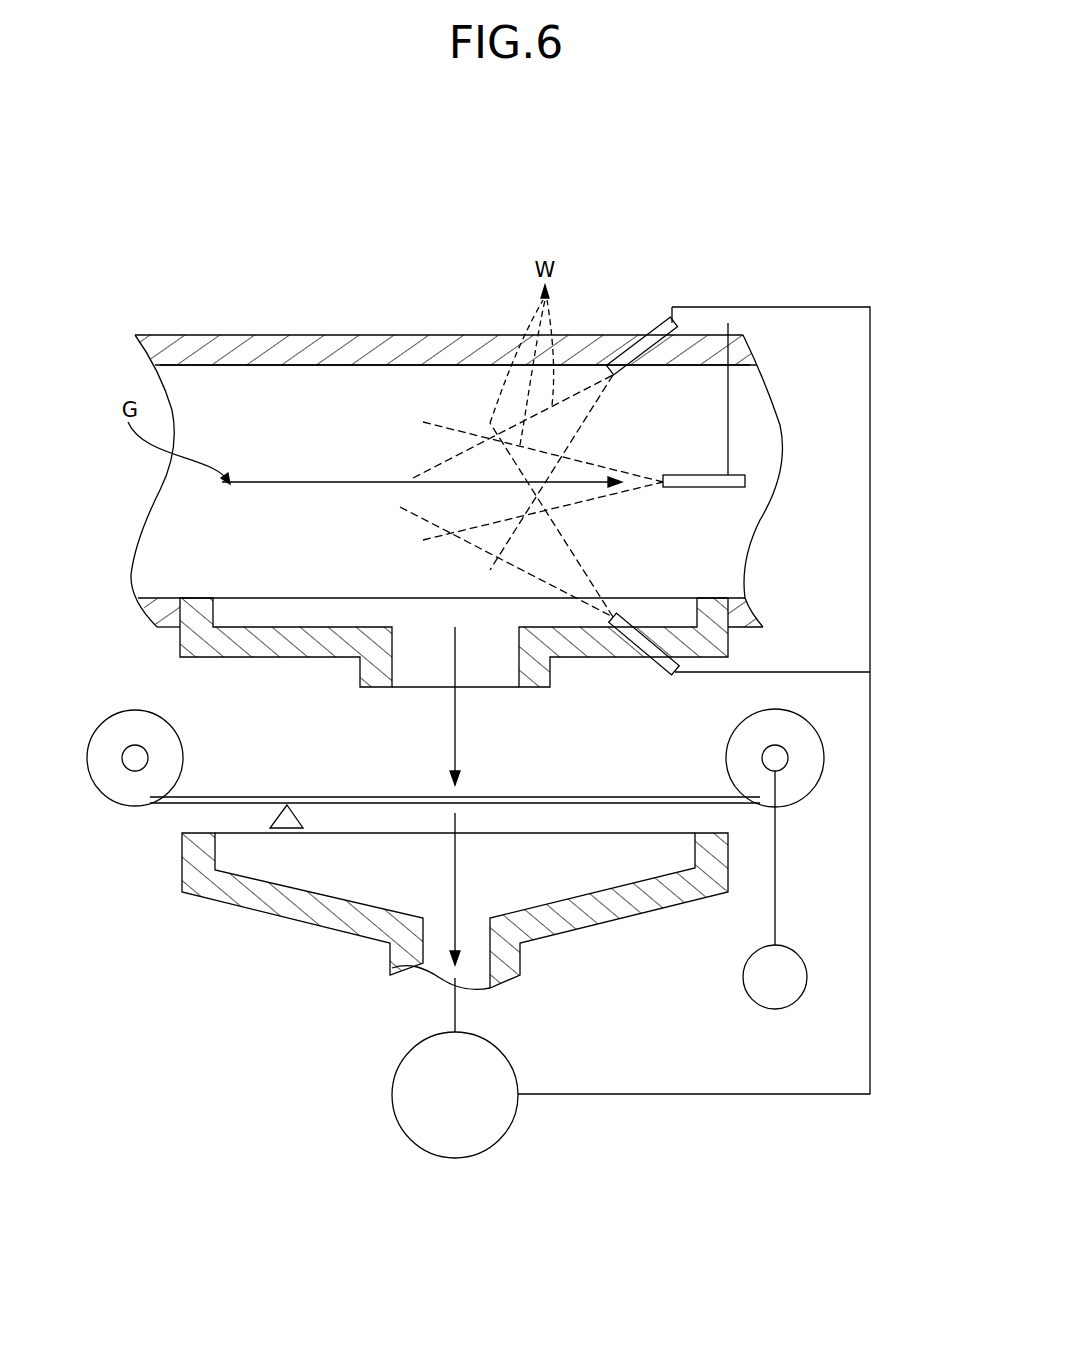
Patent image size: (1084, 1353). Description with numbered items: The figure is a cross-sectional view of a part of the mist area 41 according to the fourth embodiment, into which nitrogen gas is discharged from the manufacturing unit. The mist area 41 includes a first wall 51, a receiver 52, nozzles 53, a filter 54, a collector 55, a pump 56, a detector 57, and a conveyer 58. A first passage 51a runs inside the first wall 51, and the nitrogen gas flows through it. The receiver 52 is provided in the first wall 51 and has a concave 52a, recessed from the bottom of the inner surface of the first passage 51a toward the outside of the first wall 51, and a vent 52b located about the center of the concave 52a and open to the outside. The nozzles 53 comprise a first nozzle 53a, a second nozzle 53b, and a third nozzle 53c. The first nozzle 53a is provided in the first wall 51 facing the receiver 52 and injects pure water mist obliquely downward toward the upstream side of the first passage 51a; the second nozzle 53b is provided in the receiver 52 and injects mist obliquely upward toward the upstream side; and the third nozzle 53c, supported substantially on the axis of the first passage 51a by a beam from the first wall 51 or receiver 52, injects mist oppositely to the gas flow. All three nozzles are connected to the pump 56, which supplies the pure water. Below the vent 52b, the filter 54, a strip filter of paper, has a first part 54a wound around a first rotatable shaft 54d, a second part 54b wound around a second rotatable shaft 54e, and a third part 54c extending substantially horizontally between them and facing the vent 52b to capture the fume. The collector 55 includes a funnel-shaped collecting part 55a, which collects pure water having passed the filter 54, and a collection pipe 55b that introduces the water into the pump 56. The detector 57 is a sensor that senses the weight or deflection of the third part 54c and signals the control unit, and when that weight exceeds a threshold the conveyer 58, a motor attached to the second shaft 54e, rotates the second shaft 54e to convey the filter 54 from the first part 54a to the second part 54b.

The mist area 41 is at (96, 114).
The first wall 51 is at (198, 333).
The first passage 51a is at (385, 375).
The receiver 52 is at (525, 655).
The concave 52a is at (660, 627).
The vent 52b is at (390, 680).
The nozzles 53 is at (619, 469).
The first nozzle 53a is at (661, 318).
The second nozzle 53b is at (660, 672).
The third nozzle 53c is at (746, 481).
The filter 54 is at (512, 827).
The first part 54a is at (100, 760).
The second part 54b is at (808, 778).
The third part 54c is at (585, 796).
The first shaft 54d is at (138, 772).
The second shaft 54e is at (780, 768).
The collector 55 is at (455, 934).
The collecting part 55a is at (630, 912).
The collection pipe 55b is at (393, 962).
The pump 56 is at (480, 1157).
The detector 57 is at (278, 800).
The conveyer 58 is at (808, 977).